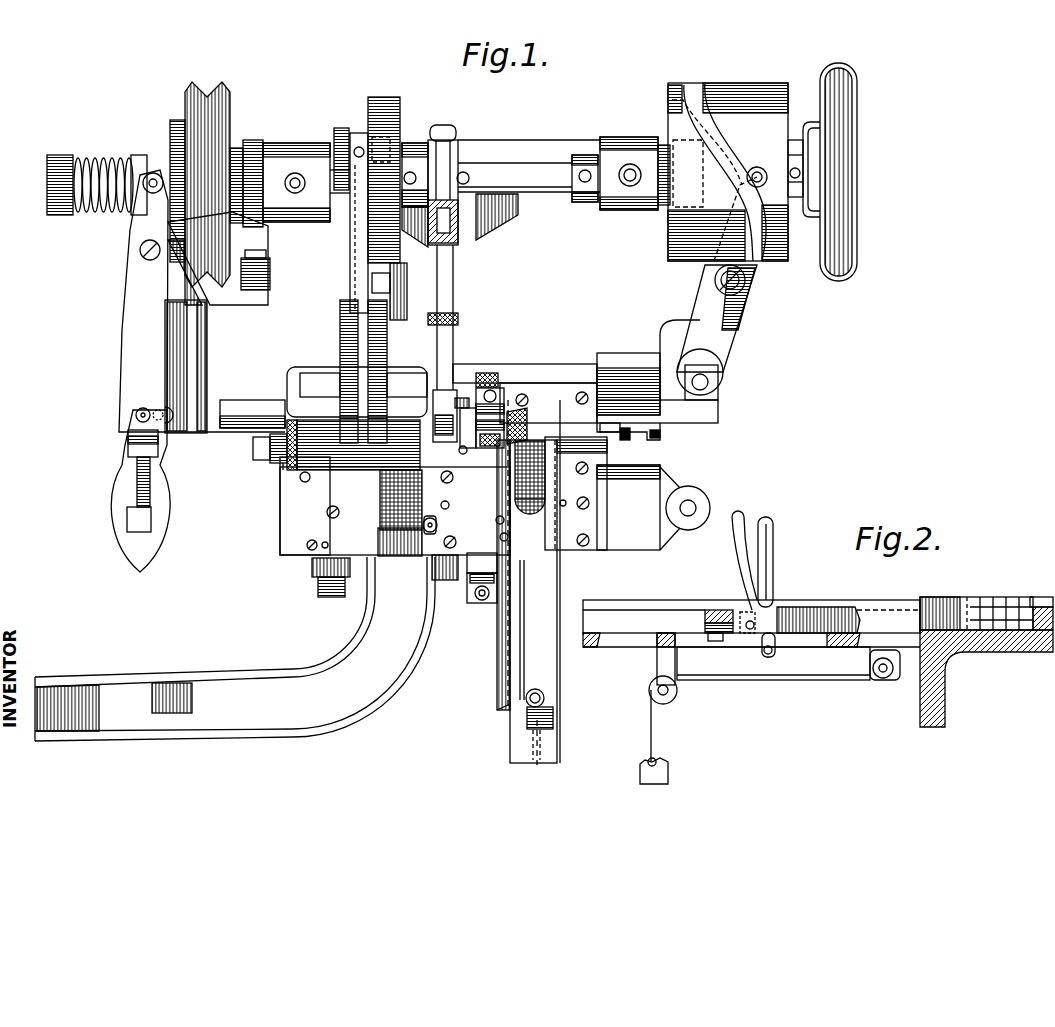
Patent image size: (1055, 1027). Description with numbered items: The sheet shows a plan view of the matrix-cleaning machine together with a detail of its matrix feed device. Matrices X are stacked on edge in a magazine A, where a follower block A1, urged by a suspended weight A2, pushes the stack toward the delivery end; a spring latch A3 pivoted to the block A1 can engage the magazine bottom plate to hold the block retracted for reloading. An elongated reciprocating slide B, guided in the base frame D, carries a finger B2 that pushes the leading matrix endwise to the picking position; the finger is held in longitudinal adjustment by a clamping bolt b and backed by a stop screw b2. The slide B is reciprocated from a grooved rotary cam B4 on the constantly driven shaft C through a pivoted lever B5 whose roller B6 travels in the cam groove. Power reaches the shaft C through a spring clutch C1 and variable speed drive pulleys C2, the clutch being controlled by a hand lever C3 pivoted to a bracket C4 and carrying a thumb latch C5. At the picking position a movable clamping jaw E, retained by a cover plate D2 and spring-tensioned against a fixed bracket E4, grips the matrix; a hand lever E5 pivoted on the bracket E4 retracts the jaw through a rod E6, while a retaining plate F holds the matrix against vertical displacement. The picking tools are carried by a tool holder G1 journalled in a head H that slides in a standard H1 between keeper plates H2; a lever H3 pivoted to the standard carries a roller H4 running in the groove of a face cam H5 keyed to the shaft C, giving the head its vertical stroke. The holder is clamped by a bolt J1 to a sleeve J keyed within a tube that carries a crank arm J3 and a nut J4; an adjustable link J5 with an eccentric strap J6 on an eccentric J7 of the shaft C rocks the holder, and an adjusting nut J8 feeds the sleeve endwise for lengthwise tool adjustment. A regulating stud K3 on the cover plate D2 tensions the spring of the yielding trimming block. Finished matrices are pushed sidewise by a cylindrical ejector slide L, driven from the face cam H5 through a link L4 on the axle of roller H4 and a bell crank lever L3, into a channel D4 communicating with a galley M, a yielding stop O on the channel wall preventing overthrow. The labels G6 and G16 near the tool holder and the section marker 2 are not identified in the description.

In FIG. 1, the magazine A is at (557, 593).
In FIG. 2, the magazine A is at (672, 607).
In FIG. 1, the follower block A1 is at (548, 687).
In FIG. 2, the follower block A1 is at (787, 610).
In FIG. 2, the suspended weight A2 is at (665, 763).
In FIG. 1, the spring latch A3 is at (548, 718).
In FIG. 2, the spring latch A3 is at (728, 634).
In FIG. 1, the reciprocating slide B is at (707, 413).
In FIG. 1, the finger B2 is at (608, 443).
In FIG. 2, the finger B2 is at (1027, 625).
In FIG. 1, the rotary cam B4 is at (726, 92).
In FIG. 1, the pivoted lever B5 is at (735, 345).
In FIG. 1, the roller B6 is at (753, 164).
In FIG. 1, the clamping bolt b is at (602, 446).
In FIG. 1, the stop screw b2 is at (653, 433).
In FIG. 1, the drive shaft C is at (545, 177).
In FIG. 1, the spring clutch C1 is at (177, 138).
In FIG. 1, the variable speed drive pulleys C2 is at (222, 126).
In FIG. 1, the hand lever C3 is at (135, 279).
In FIG. 1, the bracket C4 is at (192, 353).
In FIG. 1, the thumb latch C5 is at (137, 423).
In FIG. 1, the base frame D is at (560, 272).
In FIG. 2, the base frame D is at (980, 643).
In FIG. 1, the cover plate D2 is at (395, 511).
In FIG. 1, the channel D4 is at (405, 545).
In FIG. 1, the clamping jaw E is at (488, 450).
In FIG. 1, the fixed bracket E4 is at (478, 557).
In FIG. 1, the hand lever E5 is at (478, 599).
In FIG. 1, the rod E6 is at (473, 578).
In FIG. 1, the matrix retaining plate F is at (508, 399).
In FIG. 2, the matrix retaining plate F is at (1040, 600).
In FIG. 1, the tool holder G1 is at (468, 452).
In FIG. 1, the knurled nut G6 is at (529, 415).
In FIG. 1, the adjusting knob G16 is at (491, 380).
In FIG. 1, the head H is at (372, 458).
In FIG. 1, the standard H1 is at (305, 382).
In FIG. 1, the keeper plates H2 is at (318, 403).
In FIG. 1, the lever H3 is at (362, 270).
In FIG. 1, the roller H4 is at (386, 145).
In FIG. 1, the face cam H5 is at (400, 107).
In FIG. 1, the sleeve J is at (278, 463).
In FIG. 1, the bolt J1 is at (253, 452).
In FIG. 1, the crank arm J3 is at (440, 436).
In FIG. 1, the nut J4 is at (300, 490).
In FIG. 1, the adjustable link J5 is at (463, 270).
In FIG. 1, the eccentric strap J6 is at (455, 224).
In FIG. 1, the eccentric J7 is at (445, 153).
In FIG. 1, the adjusting nut J8 is at (287, 470).
In FIG. 1, the regulating stud K3 is at (437, 523).
In FIG. 1, the cylindrical slide L is at (402, 277).
In FIG. 1, the bell crank lever L3 is at (373, 281).
In FIG. 1, the link L4 is at (340, 127).
In FIG. 1, the galley M is at (235, 649).
In FIG. 1, the stop O is at (362, 520).
In FIG. 1, the matrices X is at (413, 500).
In FIG. 2, the matrices X is at (990, 607).
In FIG. 1, the section line 2 is at (530, 398).